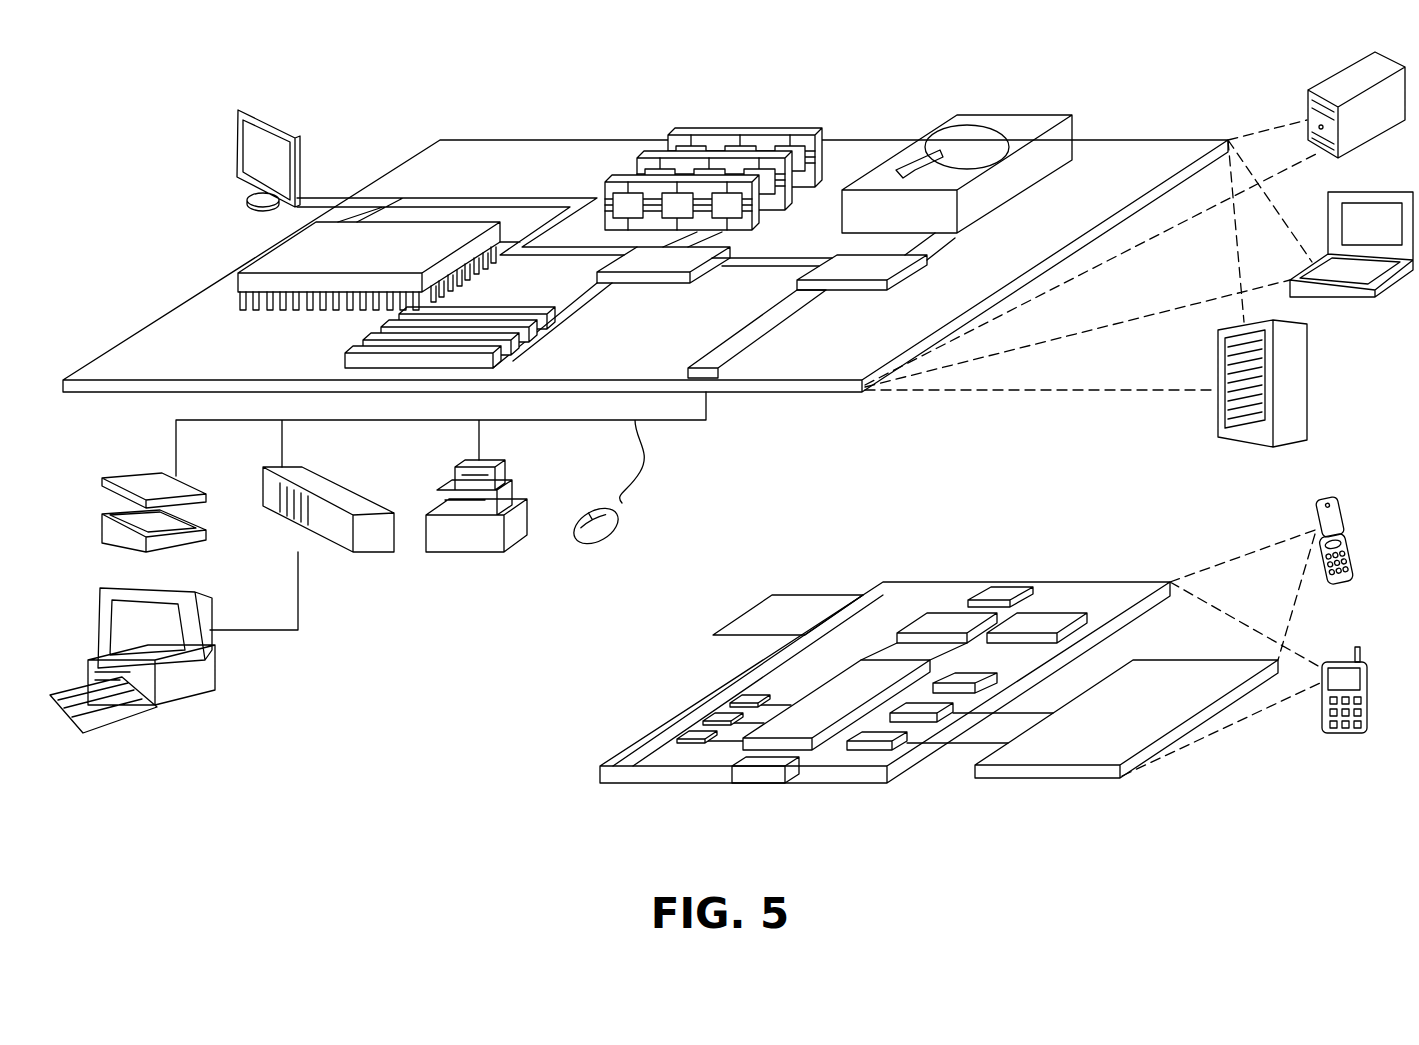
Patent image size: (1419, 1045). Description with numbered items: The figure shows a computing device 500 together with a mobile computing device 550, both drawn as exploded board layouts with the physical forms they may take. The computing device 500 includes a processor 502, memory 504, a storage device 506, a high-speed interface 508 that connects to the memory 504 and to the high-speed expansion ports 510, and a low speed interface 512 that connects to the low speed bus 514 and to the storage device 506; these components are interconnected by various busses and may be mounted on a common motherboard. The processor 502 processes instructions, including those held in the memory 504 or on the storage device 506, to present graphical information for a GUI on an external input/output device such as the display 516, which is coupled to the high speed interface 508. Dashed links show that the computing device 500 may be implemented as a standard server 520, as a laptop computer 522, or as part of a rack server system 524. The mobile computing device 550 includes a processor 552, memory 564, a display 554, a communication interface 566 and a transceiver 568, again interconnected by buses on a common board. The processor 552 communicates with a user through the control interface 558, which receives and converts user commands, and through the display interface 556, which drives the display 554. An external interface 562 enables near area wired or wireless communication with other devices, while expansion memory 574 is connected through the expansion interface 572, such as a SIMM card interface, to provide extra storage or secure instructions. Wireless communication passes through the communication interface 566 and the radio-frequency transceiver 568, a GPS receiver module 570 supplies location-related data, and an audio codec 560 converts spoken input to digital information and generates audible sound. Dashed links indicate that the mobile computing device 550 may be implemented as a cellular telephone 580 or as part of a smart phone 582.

The computing device 500 is at (376, 80).
The processor 502 is at (262, 257).
The memory 504 is at (752, 135).
The storage device 506 is at (1000, 115).
The high-speed interface 508 is at (677, 257).
The high-speed expansion ports 510 is at (378, 336).
The low speed interface 512 is at (835, 262).
The low speed bus 514 is at (708, 367).
The display 516 is at (238, 108).
The standard server 520 is at (1330, 82).
The laptop computer 522 is at (1390, 192).
The rack server system 524 is at (1307, 382).
The mobile computing device 550 is at (544, 800).
The processor 552 is at (800, 712).
The display 554 is at (1168, 678).
The display interface 556 is at (895, 745).
The control interface 558 is at (930, 712).
The audio codec 560 is at (970, 680).
The external interface 562 is at (762, 770).
The memory 564 is at (718, 716).
The communication interface 566 is at (945, 631).
The transceiver 568 is at (1042, 630).
The GPS receiver module 570 is at (1000, 598).
The expansion interface 572 is at (862, 595).
The expansion memory 574 is at (772, 595).
The cellular telephone 580 is at (1325, 498).
The smart phone 582 is at (1340, 662).